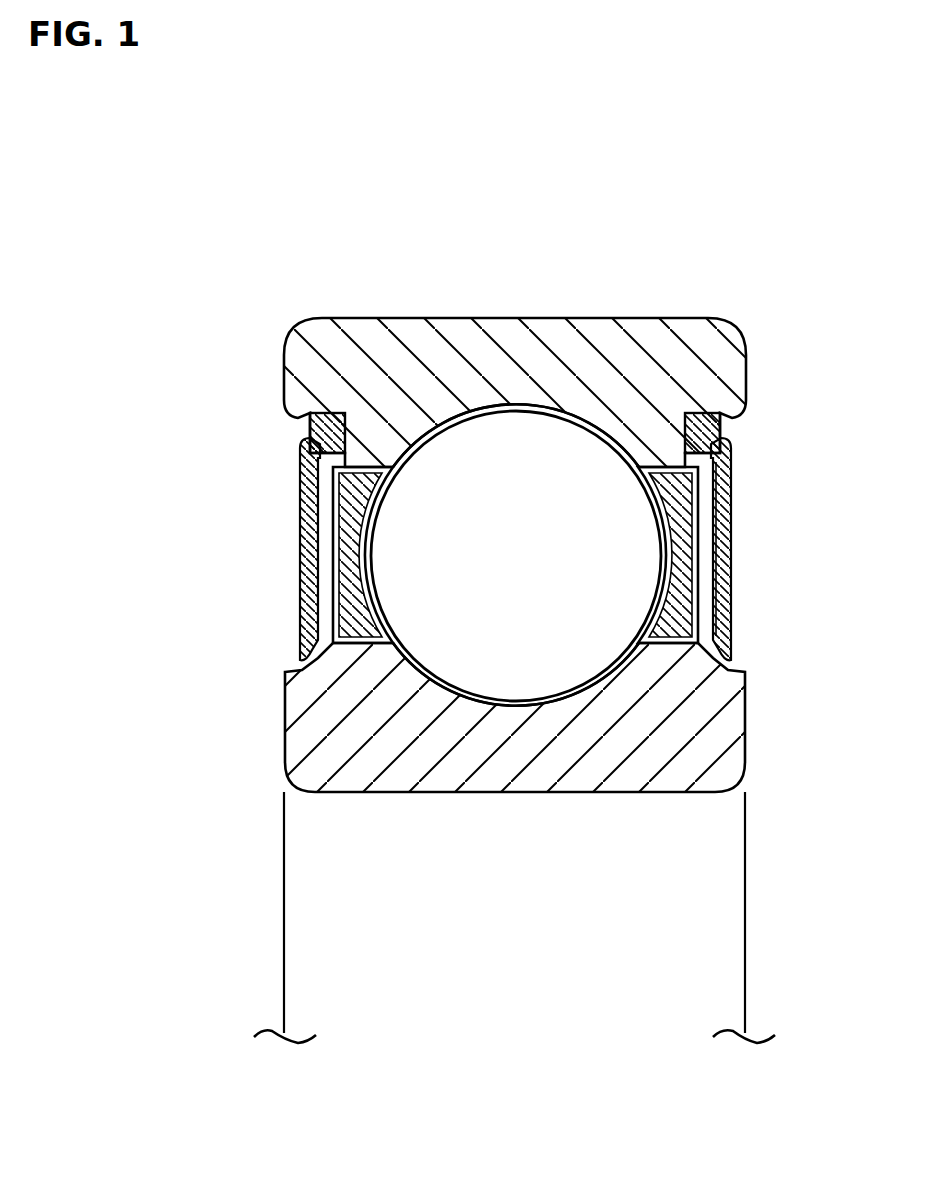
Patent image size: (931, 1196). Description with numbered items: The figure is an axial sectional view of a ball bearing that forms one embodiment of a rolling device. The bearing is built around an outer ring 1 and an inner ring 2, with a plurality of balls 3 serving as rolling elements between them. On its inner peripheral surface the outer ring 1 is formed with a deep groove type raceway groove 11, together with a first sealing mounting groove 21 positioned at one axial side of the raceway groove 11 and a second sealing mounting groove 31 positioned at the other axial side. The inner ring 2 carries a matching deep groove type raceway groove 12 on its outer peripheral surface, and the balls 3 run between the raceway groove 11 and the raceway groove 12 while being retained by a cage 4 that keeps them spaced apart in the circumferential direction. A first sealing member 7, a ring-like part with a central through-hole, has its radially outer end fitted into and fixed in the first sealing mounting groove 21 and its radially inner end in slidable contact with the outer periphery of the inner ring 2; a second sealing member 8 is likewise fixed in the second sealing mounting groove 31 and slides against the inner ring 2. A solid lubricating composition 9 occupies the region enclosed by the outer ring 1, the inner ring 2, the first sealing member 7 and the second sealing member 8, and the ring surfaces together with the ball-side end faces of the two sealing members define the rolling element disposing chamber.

The outer ring 1 is at (493, 322).
The inner ring 2 is at (438, 768).
The balls 3 is at (438, 493).
The cage 4 is at (700, 583).
The first sealing member 7 is at (305, 517).
The second sealing member 8 is at (720, 541).
The solid lubricating composition 9 is at (700, 498).
The raceway groove 11 is at (518, 400).
The raceway groove 12 is at (557, 697).
The first sealing mounting groove 21 is at (310, 430).
The second sealing mounting groove 31 is at (722, 428).